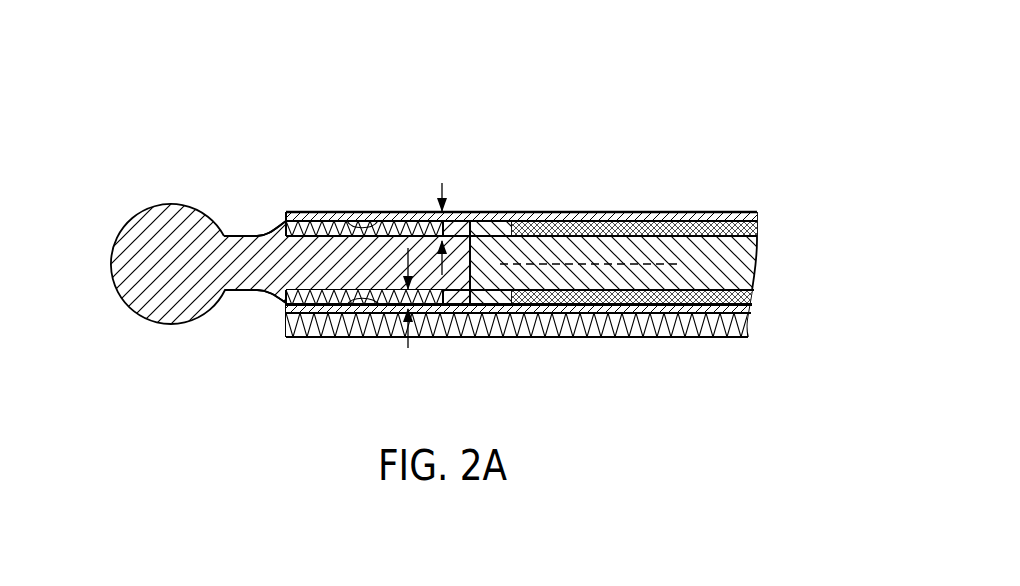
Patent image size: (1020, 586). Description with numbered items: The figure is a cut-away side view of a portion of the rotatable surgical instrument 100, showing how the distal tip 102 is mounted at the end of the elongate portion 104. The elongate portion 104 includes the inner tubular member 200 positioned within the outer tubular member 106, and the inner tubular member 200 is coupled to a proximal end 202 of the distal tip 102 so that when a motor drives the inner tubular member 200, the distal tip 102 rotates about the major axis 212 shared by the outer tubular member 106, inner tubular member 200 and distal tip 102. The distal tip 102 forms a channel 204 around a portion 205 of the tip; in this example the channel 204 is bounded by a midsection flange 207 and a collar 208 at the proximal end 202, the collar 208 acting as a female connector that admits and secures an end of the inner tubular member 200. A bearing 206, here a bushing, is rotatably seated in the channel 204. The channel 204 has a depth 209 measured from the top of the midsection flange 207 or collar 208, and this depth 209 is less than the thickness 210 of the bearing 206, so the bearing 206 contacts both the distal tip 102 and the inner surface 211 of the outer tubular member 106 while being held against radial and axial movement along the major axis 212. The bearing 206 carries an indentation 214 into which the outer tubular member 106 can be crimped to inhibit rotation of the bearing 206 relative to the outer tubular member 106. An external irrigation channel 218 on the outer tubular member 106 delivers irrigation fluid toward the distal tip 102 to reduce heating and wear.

The rotatable surgical instrument 100 is at (193, 89).
The distal tip 102 is at (176, 181).
The elongate portion 104 is at (620, 210).
The outer tubular member 106 is at (666, 213).
The inner tubular member 200 is at (632, 283).
The proximal end 202 is at (483, 332).
The channel 204 is at (283, 224).
The portion 205 is at (330, 258).
The bearing 206 is at (300, 213).
The midsection flange 207 is at (282, 300).
The collar 208 is at (466, 214).
The depth 209 is at (430, 213).
The thickness 210 is at (392, 333).
The inner surface 211 is at (334, 332).
The major axis 212 is at (545, 262).
The indentation 214 is at (366, 214).
The external irrigation channel 218 is at (476, 313).